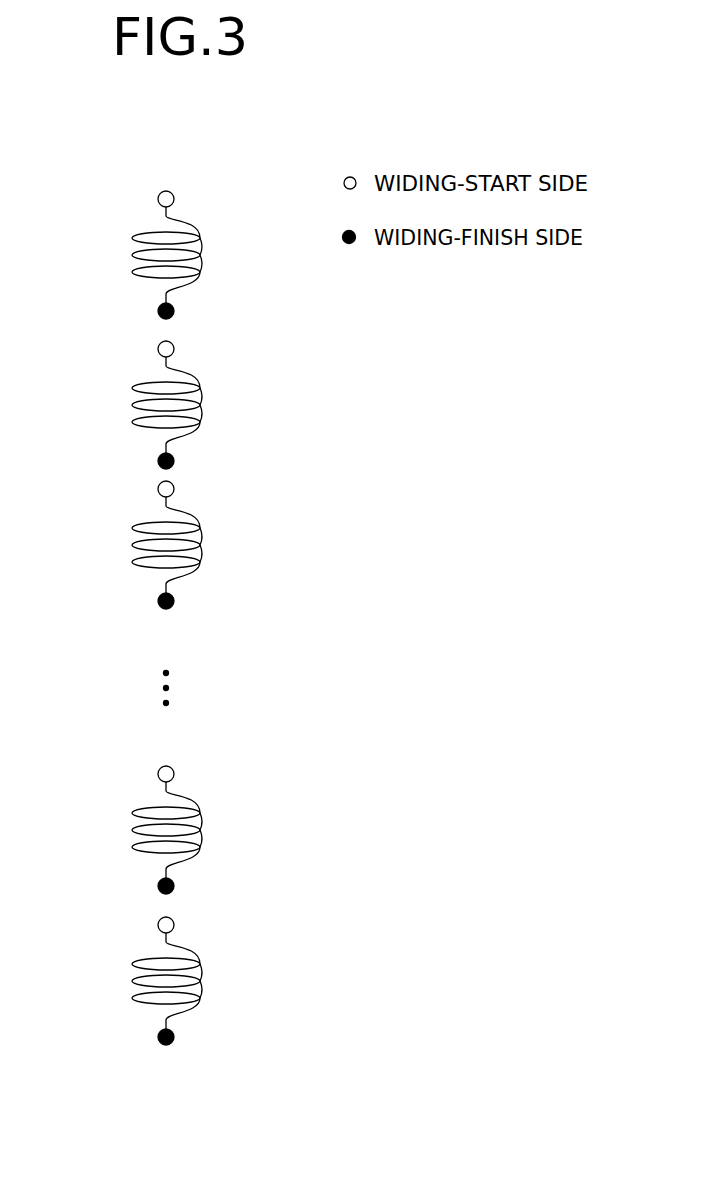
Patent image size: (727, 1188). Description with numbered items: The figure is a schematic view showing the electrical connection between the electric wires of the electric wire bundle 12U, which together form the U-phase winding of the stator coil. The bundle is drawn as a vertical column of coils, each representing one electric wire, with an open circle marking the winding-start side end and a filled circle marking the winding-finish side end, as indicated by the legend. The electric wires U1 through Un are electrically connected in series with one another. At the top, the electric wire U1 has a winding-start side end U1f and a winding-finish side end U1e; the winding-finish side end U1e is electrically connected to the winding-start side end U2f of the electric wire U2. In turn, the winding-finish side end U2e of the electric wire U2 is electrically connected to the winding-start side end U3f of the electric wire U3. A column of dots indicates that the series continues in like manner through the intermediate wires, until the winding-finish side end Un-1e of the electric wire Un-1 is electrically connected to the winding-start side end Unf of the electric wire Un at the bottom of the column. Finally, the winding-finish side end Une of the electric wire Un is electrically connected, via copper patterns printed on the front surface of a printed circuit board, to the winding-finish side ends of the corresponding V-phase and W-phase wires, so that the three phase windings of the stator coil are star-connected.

The electric wire bundle 12U is at (78, 190).
The electric wire U1 is at (131, 256).
The winding-start side end U1f is at (174, 199).
The winding-finish side end U1e is at (174, 311).
The electric wire U2 is at (131, 406).
The winding-start side end U2f is at (174, 349).
The winding-finish side end U2e is at (174, 461).
The electric wire U3 is at (131, 546).
The winding-start side end U3f is at (174, 489).
The electric wire Un-1 is at (131, 831).
The winding-finish side end Un-1e is at (174, 886).
The electric wire Un is at (131, 982).
The winding-start side end Unf is at (174, 925).
The winding-finish side end Une is at (174, 1037).